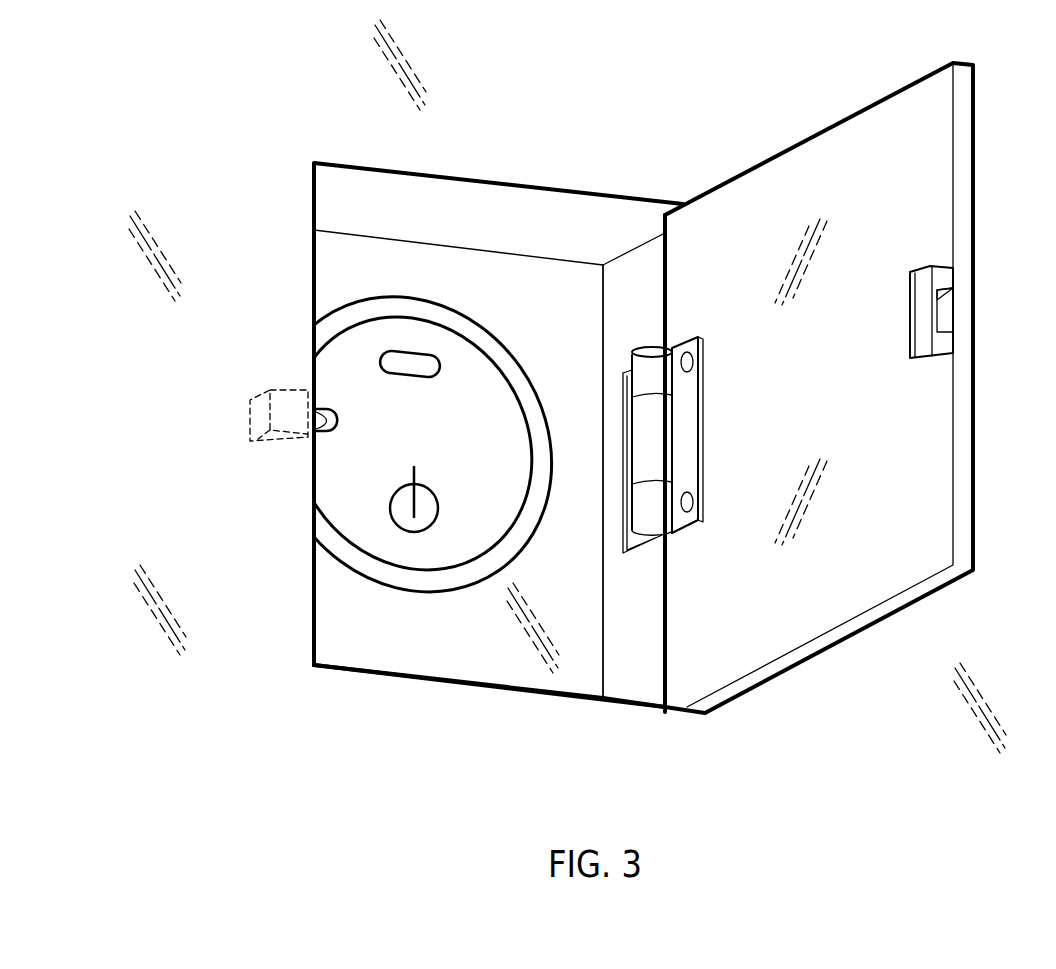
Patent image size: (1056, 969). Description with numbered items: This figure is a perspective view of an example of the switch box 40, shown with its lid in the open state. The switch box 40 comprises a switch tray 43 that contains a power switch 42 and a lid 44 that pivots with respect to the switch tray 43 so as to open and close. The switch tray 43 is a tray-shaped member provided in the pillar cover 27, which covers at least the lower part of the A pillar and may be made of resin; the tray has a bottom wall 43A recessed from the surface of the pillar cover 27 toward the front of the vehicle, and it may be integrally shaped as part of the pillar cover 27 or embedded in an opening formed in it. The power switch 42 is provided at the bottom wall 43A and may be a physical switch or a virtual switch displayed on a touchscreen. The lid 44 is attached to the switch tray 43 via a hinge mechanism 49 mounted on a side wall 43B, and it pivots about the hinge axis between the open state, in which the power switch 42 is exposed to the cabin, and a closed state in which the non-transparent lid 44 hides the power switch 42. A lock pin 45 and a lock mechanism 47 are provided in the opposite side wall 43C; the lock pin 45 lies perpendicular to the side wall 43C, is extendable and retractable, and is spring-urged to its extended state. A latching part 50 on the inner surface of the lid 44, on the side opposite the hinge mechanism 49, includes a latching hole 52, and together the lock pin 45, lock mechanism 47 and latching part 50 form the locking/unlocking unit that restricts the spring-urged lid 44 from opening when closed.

The pillar cover 27 is at (187, 183).
The switch box 40 is at (760, 78).
The power switch 42 is at (463, 380).
The switch tray 43 is at (567, 220).
The bottom wall 43A is at (438, 643).
The side wall 43B is at (642, 665).
The side wall 43C is at (314, 588).
The lid 44 is at (837, 123).
The lock pin 45 is at (330, 437).
The lock mechanism 47 is at (252, 412).
The hinge mechanism 49 is at (683, 432).
The latching part 50 is at (908, 347).
The latching hole 52 is at (947, 313).